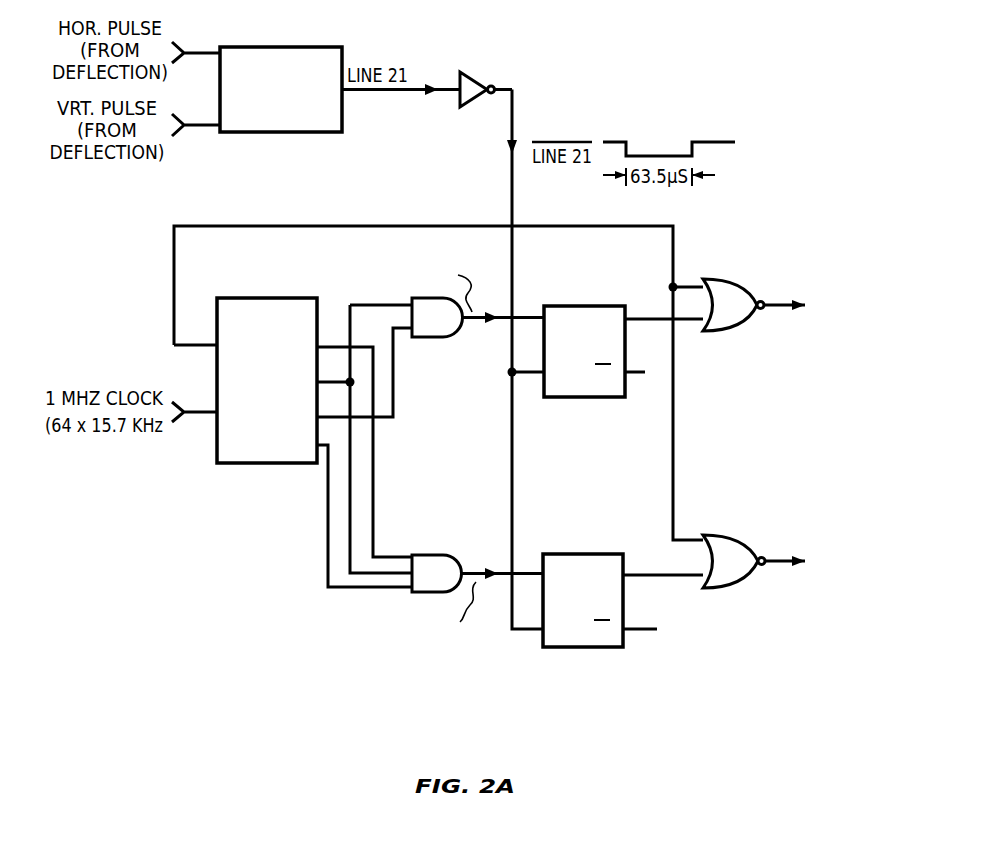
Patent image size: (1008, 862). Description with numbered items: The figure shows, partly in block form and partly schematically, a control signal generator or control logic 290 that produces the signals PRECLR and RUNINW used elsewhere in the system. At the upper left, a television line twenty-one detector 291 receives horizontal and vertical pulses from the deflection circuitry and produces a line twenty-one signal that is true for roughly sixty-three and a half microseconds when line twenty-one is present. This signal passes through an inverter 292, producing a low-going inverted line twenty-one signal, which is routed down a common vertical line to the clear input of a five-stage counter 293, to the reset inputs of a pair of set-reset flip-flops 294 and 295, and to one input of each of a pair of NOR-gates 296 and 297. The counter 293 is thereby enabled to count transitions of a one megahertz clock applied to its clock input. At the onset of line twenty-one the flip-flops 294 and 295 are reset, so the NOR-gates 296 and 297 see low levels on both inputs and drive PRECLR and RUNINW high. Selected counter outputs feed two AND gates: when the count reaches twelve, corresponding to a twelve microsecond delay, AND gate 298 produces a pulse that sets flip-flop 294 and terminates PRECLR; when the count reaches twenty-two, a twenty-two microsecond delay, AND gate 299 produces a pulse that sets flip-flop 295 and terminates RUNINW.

The control logic 290 is at (95, 262).
The television line 21 detector 291 is at (228, 47).
The inverter 292 is at (468, 74).
The 5-stage counter 293 is at (227, 298).
The set-reset flip-flop 294 is at (560, 306).
The set-reset flip-flop 295 is at (556, 554).
The NOR-gate 296 is at (710, 279).
The NOR-gate 297 is at (708, 535).
The AND gate 298 is at (425, 337).
The AND gate 299 is at (422, 555).